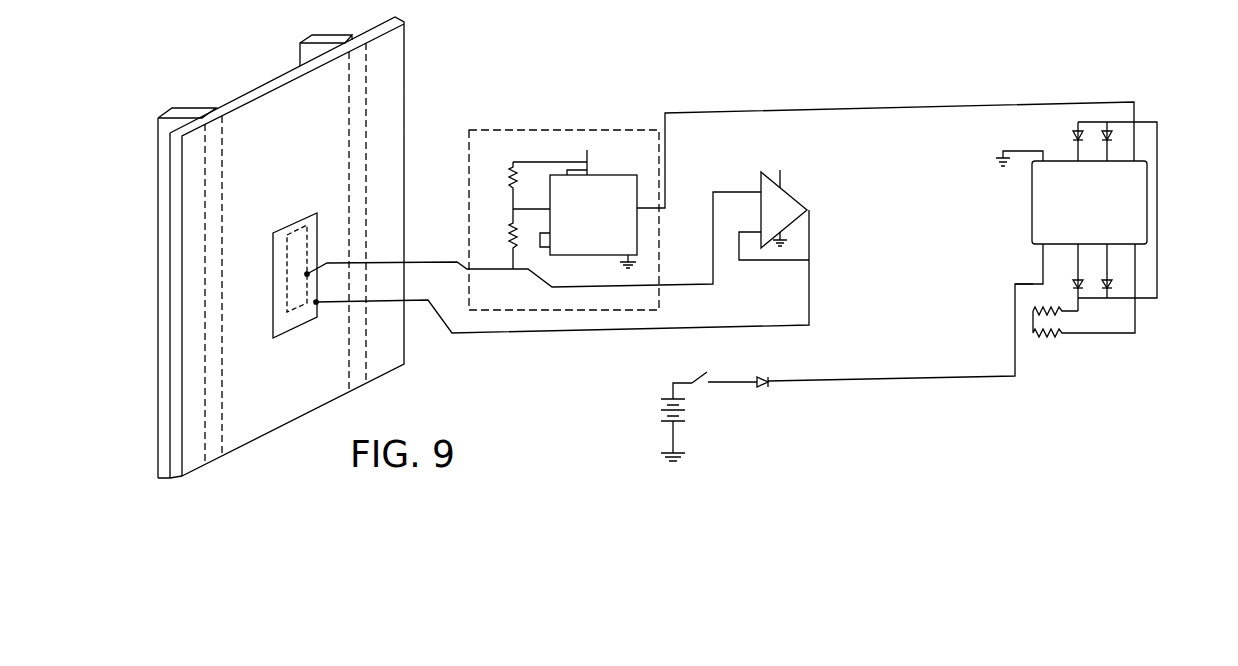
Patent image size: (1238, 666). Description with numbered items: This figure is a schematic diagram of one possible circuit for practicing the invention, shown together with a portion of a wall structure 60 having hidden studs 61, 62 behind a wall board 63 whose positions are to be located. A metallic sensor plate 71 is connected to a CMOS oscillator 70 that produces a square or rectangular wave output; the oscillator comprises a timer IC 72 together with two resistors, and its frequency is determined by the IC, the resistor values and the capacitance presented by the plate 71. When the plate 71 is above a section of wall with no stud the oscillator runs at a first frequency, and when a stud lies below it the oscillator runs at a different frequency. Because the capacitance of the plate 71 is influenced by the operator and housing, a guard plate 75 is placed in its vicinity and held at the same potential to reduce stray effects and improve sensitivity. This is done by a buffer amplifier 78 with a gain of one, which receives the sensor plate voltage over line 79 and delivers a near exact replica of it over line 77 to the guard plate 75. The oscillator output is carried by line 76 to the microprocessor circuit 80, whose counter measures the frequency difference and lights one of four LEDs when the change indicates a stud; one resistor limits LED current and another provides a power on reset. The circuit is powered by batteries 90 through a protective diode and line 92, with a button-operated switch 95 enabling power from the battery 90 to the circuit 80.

The wall structure 60 is at (242, 58).
The stud 61 is at (172, 112).
The stud 62 is at (312, 37).
The wall board 63 is at (405, 53).
The CMOS oscillator 70 is at (603, 123).
The sensor plate 71 is at (302, 247).
The timer IC 72 is at (617, 173).
The guard plate 75 is at (273, 272).
The oscillator output line 76 is at (827, 107).
The line 77 is at (720, 323).
The buffer amplifier 78 is at (788, 195).
The sensor input line 79 is at (677, 277).
The microprocessor circuit 80 is at (1150, 178).
The batteries 90 is at (655, 422).
The line 92 is at (837, 377).
The switch 95 is at (690, 375).